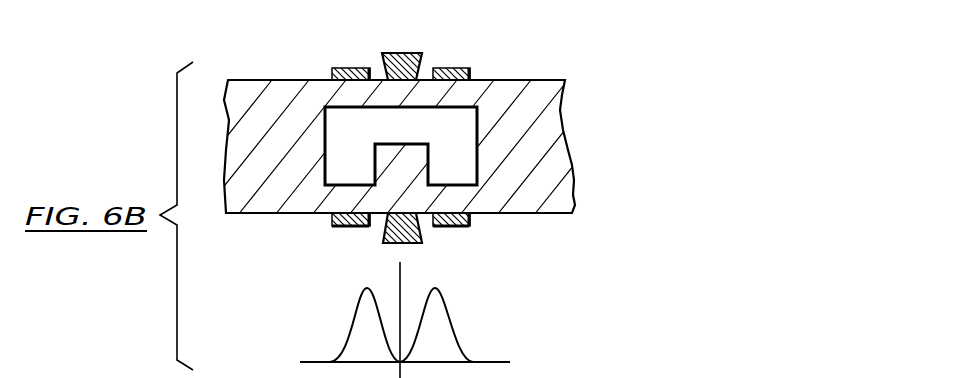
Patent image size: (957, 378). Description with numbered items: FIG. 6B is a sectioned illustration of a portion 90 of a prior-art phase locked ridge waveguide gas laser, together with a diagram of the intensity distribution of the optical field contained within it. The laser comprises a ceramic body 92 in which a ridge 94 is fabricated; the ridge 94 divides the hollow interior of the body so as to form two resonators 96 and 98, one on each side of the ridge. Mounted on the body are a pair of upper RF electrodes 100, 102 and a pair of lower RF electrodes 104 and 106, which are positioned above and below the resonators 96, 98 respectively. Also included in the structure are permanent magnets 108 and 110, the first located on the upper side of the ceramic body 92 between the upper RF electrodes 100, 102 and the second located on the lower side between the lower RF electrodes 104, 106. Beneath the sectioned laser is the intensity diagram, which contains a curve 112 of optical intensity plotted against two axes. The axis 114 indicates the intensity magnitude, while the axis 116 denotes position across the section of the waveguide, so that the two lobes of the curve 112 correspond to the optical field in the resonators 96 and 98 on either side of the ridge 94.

The portion of phase locked ridge waveguide gas laser 90 is at (603, 93).
The ceramic body 92 is at (569, 170).
The ridge 94 is at (405, 146).
The resonator 96 is at (364, 157).
The resonator 98 is at (464, 157).
The upper RF electrode 100 is at (338, 68).
The upper RF electrode 102 is at (462, 68).
The lower RF electrode 104 is at (332, 224).
The lower RF electrode 106 is at (458, 227).
The permanent magnet 108 is at (408, 53).
The permanent magnet 110 is at (383, 243).
The curve of optical intensity 112 is at (452, 318).
The axis 114 is at (400, 277).
The axis 116 is at (510, 362).